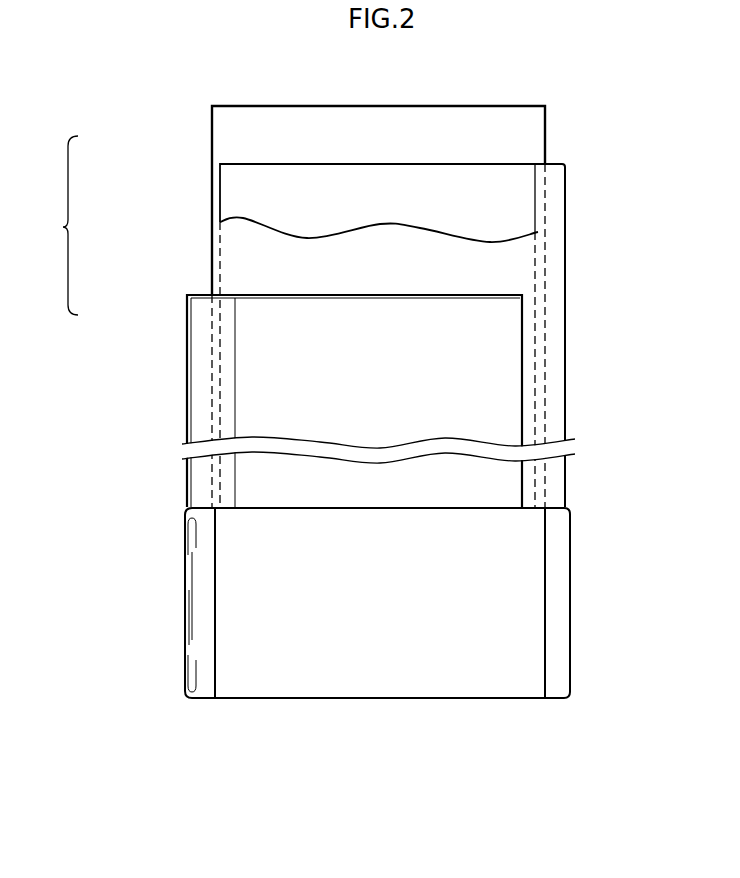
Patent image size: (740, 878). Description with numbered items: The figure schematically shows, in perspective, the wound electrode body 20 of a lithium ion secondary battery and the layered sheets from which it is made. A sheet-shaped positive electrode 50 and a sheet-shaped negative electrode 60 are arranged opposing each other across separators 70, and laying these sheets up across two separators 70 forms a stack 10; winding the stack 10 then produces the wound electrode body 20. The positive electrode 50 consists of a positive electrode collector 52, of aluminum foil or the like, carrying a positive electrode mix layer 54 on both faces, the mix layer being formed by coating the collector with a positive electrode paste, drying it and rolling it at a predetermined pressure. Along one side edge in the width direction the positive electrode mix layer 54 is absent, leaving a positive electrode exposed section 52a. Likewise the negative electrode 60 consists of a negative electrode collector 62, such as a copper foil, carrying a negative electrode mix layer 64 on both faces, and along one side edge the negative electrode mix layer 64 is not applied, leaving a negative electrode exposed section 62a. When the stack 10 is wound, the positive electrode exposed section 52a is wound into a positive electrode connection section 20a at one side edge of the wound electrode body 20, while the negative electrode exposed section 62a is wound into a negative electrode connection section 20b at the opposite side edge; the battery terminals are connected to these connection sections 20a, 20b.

The stack 10 is at (55, 225).
The wound electrode body 20 is at (438, 680).
The positive electrode connection section 20a is at (205, 592).
The negative electrode connection section 20b is at (555, 605).
The positive electrode 50 is at (185, 319).
The positive electrode collector 52 is at (185, 435).
The positive electrode exposed section 52a is at (203, 403).
The positive electrode mix layer 54 is at (248, 362).
The negative electrode 60 is at (216, 187).
The negative electrode collector 62 is at (565, 342).
The negative electrode exposed section 62a is at (553, 312).
The negative electrode mix layer 64 is at (530, 185).
The separator 70 is at (232, 138).